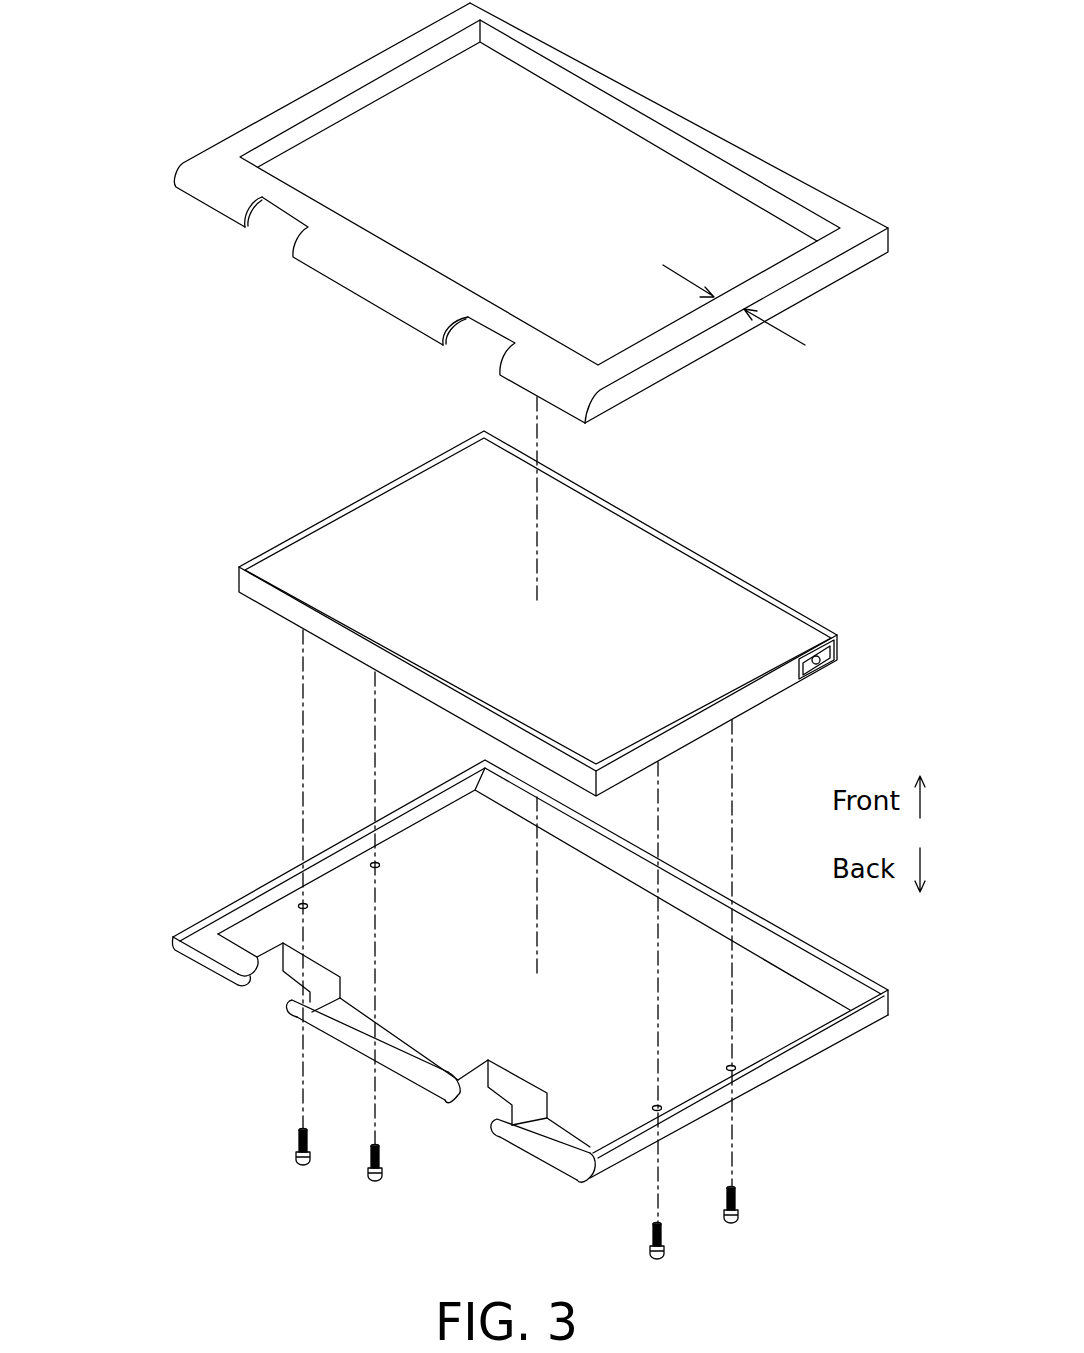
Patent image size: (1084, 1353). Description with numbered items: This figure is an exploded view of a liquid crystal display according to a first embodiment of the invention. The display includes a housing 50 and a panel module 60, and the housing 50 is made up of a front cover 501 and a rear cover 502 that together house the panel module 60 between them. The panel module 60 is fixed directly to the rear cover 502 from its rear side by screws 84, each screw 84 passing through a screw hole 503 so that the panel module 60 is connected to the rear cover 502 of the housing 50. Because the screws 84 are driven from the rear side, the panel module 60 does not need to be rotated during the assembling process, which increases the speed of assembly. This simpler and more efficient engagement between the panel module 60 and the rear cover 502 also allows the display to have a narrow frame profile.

The housing 50 is at (112, 380).
The front cover 501 is at (193, 198).
The rear cover 502 is at (185, 932).
The screw hole 503 is at (303, 903).
The panel module 60 is at (728, 598).
The screws 84 is at (297, 1140).